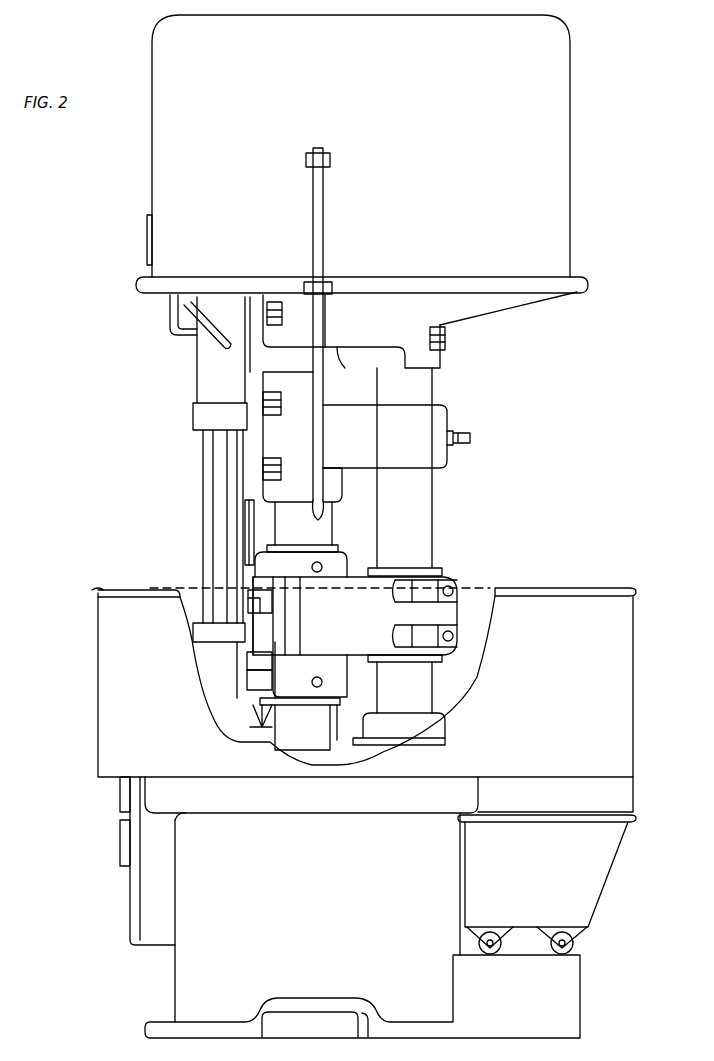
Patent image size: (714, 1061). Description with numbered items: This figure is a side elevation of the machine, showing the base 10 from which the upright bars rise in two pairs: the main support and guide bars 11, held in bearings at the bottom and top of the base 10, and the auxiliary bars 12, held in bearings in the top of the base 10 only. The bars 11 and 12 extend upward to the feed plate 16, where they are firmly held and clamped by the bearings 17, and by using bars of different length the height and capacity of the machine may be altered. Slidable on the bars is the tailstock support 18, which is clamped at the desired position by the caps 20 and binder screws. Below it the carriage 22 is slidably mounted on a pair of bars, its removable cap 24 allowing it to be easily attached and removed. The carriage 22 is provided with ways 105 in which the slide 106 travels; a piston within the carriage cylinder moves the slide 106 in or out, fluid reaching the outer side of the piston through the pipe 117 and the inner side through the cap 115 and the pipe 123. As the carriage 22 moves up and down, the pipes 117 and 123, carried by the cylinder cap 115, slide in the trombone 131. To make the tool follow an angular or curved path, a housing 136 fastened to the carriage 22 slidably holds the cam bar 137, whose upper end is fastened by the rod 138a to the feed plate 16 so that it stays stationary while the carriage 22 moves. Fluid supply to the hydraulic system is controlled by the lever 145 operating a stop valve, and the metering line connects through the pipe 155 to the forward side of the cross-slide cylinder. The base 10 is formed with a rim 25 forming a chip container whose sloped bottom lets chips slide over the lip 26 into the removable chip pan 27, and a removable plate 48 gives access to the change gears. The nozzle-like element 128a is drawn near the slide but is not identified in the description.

The base 10 is at (362, 925).
The main support and guide bars 11 is at (301, 626).
The auxiliary support and guide bars 12 is at (399, 556).
The feed plate 16 is at (537, 288).
The bearings 17 is at (458, 349).
The tailstock support 18 is at (396, 436).
The caps 20 is at (267, 397).
The carriage 22 is at (280, 597).
The removable cap 24 is at (447, 618).
The rim or lip 25 is at (389, 795).
The lip 26 is at (478, 805).
The removable chip pan 27 is at (547, 884).
The removable plate 48 is at (136, 890).
The ways 105 is at (273, 673).
The slide 106 is at (250, 613).
The cap 115 is at (207, 629).
The pipe 117 is at (203, 573).
The pipe 123 is at (195, 322).
The nozzle 128a is at (258, 712).
The trombone 131 is at (199, 356).
The housing 136 is at (247, 686).
The cam bar 137 is at (247, 545).
The rod 138a is at (244, 491).
The lever 145 is at (320, 440).
The pipe 155 is at (167, 318).